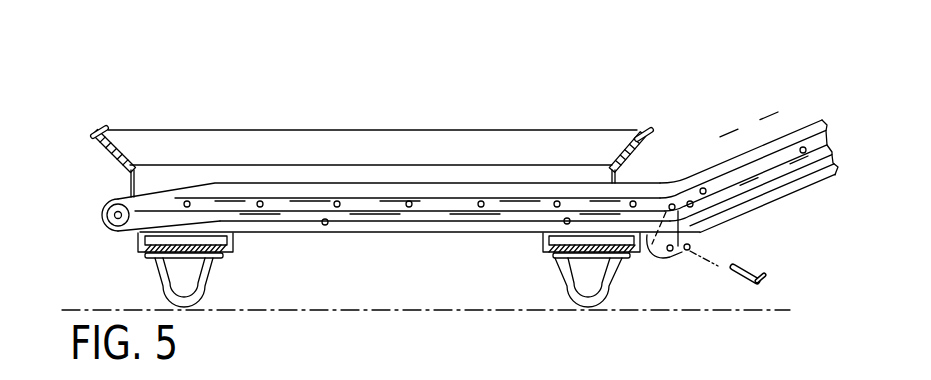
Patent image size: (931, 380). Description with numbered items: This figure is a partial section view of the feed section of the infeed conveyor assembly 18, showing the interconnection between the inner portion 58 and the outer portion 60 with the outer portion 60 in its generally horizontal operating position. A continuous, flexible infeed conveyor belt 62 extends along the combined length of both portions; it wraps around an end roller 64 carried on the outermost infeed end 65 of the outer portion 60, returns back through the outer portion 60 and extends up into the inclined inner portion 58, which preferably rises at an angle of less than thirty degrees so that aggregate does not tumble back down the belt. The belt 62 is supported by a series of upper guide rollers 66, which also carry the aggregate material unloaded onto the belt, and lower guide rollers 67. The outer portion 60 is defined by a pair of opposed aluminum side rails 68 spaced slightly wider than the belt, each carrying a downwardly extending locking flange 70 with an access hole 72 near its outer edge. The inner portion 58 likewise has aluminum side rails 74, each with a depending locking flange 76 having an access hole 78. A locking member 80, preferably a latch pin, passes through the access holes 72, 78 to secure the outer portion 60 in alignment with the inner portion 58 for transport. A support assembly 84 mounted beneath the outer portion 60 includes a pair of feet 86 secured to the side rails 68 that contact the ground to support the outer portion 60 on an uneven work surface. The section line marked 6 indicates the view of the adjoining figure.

The infeed conveyor assembly 18 is at (744, 72).
The section line of FIG. 6 is at (93, 222).
The inner portion 58 is at (829, 174).
The infeed conveyor belt 62 is at (771, 150).
The side rails 74 is at (773, 193).
The locking flange 76 is at (698, 233).
The access hole 78 is at (690, 253).
The locking member 80 is at (767, 278).
The access hole 72 is at (670, 252).
The locking flange 70 is at (650, 243).
The feet 86 is at (593, 309).
The support assembly 84 is at (533, 280).
The outer portion 60 is at (460, 225).
The side rails 68 is at (377, 229).
The lower guide rollers 67 is at (322, 225).
The upper guide rollers 66 is at (333, 201).
The infeed end 65 is at (102, 221).
The end roller 64 is at (115, 229).